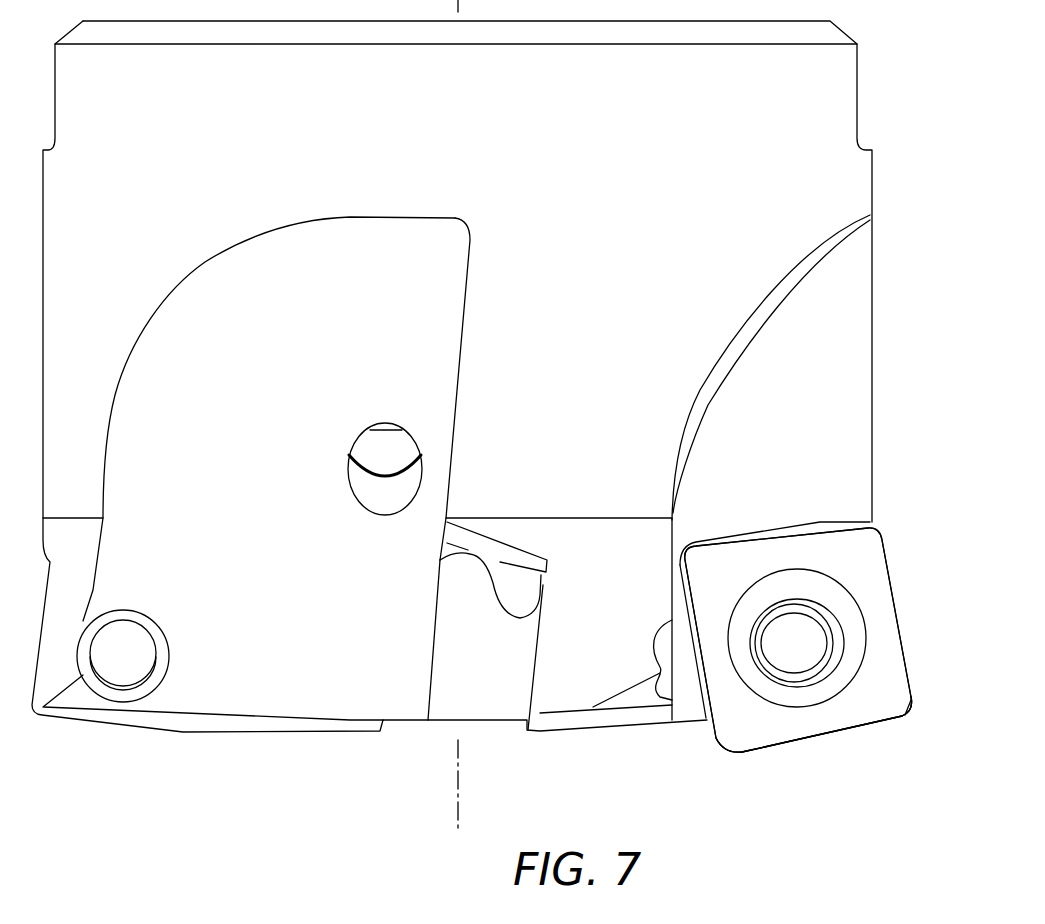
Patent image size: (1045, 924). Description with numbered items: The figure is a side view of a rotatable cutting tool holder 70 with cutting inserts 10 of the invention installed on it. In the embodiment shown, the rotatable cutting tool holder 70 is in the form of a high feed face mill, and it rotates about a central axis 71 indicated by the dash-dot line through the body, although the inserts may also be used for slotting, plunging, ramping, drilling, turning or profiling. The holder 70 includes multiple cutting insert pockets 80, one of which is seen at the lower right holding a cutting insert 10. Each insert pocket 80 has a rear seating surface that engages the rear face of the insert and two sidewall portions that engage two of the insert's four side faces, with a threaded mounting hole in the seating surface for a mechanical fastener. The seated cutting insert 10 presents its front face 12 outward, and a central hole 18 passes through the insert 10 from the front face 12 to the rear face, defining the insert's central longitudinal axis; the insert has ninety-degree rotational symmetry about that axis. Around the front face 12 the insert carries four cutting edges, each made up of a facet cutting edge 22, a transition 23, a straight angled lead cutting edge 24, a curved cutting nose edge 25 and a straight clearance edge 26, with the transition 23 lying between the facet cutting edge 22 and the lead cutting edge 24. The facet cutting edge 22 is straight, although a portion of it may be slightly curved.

The rotatable cutting tool holder 70 is at (890, 160).
The central axis 71 is at (458, 778).
The cutting insert pocket 80 is at (725, 540).
The cutting insert 10 is at (873, 563).
The front face 12 is at (730, 598).
The central hole 18 is at (820, 668).
The straight clearance edge 26 is at (917, 677).
The curved cutting nose edge 25 is at (915, 712).
The straight angled lead cutting edge 24 is at (837, 737).
The transition 23 is at (775, 752).
The facet cutting edge 22 is at (760, 752).